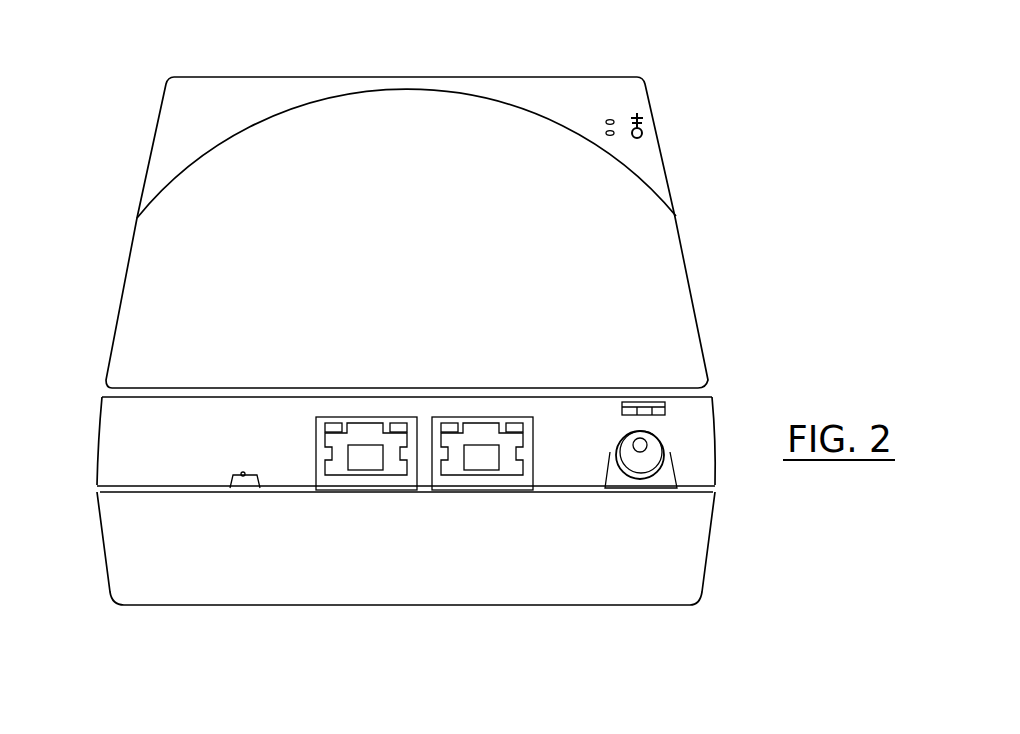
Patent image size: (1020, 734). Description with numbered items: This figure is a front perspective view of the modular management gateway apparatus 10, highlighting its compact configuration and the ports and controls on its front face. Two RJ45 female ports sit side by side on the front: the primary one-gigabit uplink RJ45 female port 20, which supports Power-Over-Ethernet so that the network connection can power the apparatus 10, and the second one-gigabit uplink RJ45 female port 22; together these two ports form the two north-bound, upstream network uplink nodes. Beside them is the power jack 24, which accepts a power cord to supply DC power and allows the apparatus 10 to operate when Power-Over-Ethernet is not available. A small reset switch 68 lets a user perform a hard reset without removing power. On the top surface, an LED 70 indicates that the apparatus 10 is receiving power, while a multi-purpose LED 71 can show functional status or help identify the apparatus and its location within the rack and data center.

The modular management gateway apparatus 10 is at (143, 110).
The primary 1G uplink RJ45 female port 20 is at (363, 463).
The second 1G uplink RJ45 female port 22 is at (480, 463).
The power jack 24 is at (633, 457).
The reset switch 68 is at (243, 478).
The LED 70 is at (612, 130).
The multi-purpose LED 71 is at (609, 119).